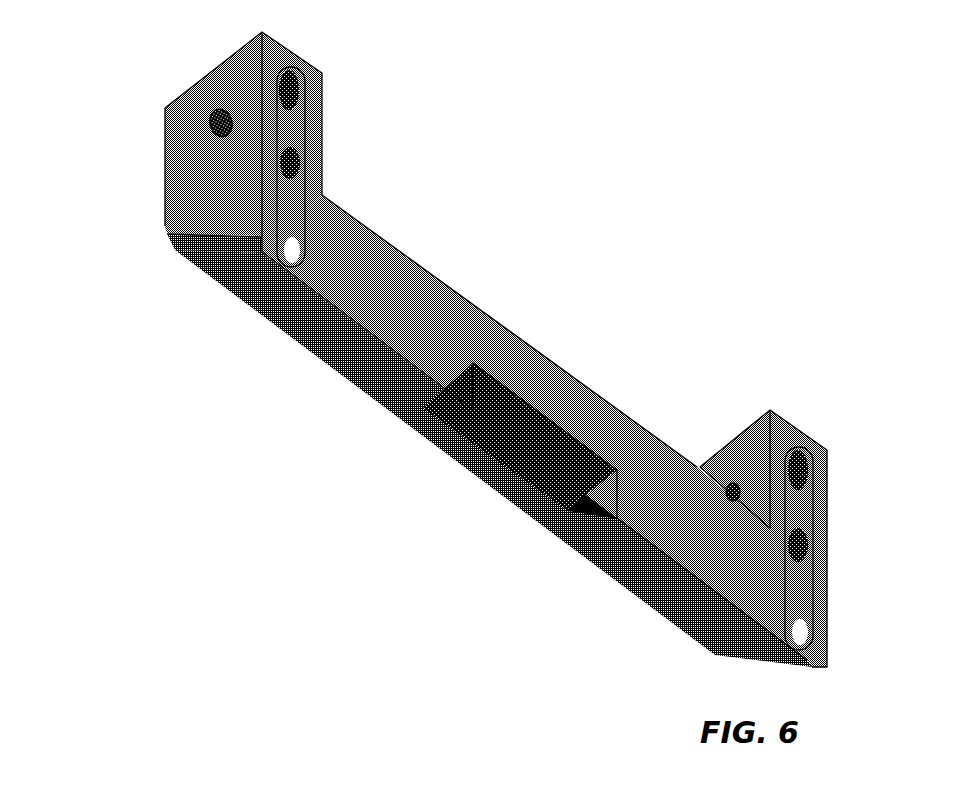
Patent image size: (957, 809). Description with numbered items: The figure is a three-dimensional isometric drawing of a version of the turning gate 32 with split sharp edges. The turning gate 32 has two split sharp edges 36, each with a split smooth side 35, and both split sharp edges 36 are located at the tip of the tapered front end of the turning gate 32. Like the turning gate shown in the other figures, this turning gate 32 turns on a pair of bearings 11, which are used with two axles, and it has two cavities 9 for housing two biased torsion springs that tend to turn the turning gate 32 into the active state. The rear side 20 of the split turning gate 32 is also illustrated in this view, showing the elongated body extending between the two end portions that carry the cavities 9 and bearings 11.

The cavity 9 is at (293, 120).
The bearing 11 is at (228, 124).
The rear side 20 is at (392, 417).
The turning gate 32 is at (367, 262).
The split smooth side 35 is at (283, 307).
The split sharp edge 36 is at (383, 347).